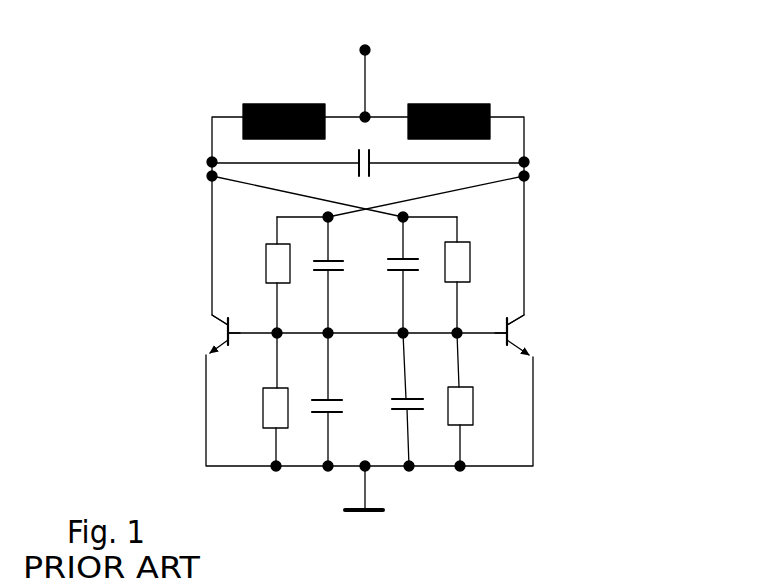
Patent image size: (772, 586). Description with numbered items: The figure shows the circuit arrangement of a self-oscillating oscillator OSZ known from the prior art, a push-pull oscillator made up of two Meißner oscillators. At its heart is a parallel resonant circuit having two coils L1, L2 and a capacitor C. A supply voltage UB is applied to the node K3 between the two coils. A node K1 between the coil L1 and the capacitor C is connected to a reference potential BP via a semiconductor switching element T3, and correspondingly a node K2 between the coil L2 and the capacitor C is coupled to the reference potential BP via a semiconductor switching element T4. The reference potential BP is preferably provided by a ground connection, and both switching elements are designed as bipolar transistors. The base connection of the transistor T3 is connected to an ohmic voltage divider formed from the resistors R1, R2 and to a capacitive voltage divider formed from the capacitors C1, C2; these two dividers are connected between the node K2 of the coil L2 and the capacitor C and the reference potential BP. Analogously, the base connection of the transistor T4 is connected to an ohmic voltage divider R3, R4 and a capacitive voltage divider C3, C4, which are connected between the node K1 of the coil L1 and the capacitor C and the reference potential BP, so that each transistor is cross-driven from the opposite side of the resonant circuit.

The coil L1 is at (287, 103).
The coil L2 is at (462, 102).
The node K1 is at (204, 157).
The node K2 is at (528, 155).
The node K3 is at (362, 113).
The supply voltage UB is at (392, 80).
The capacitor C is at (371, 168).
The capacitor C1 is at (343, 273).
The capacitor C2 is at (333, 397).
The capacitor C3 is at (396, 256).
The capacitor C4 is at (404, 413).
The resistor R1 is at (264, 262).
The resistor R2 is at (263, 404).
The resistor R3 is at (472, 260).
The resistor R4 is at (475, 405).
The semiconductor switching element T3 is at (210, 330).
The semiconductor switching element T4 is at (518, 333).
The reference potential BP is at (360, 470).
The self-oscillating oscillator OSZ is at (618, 222).